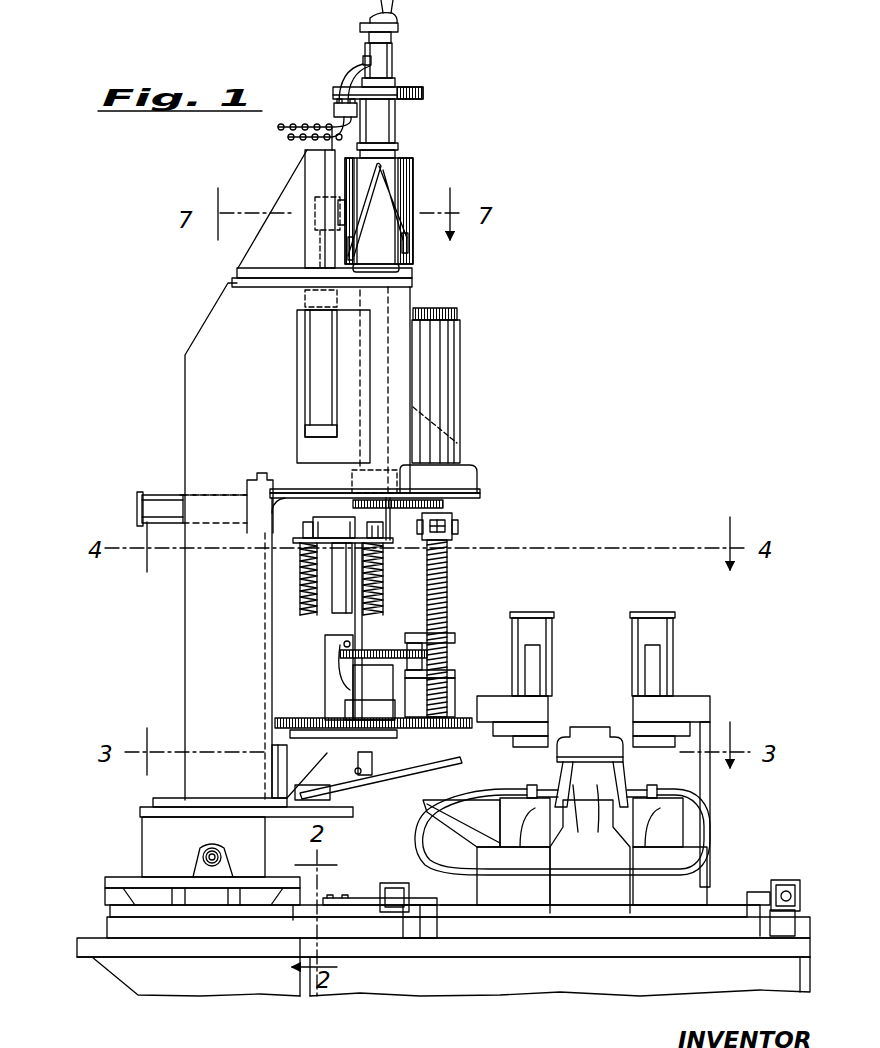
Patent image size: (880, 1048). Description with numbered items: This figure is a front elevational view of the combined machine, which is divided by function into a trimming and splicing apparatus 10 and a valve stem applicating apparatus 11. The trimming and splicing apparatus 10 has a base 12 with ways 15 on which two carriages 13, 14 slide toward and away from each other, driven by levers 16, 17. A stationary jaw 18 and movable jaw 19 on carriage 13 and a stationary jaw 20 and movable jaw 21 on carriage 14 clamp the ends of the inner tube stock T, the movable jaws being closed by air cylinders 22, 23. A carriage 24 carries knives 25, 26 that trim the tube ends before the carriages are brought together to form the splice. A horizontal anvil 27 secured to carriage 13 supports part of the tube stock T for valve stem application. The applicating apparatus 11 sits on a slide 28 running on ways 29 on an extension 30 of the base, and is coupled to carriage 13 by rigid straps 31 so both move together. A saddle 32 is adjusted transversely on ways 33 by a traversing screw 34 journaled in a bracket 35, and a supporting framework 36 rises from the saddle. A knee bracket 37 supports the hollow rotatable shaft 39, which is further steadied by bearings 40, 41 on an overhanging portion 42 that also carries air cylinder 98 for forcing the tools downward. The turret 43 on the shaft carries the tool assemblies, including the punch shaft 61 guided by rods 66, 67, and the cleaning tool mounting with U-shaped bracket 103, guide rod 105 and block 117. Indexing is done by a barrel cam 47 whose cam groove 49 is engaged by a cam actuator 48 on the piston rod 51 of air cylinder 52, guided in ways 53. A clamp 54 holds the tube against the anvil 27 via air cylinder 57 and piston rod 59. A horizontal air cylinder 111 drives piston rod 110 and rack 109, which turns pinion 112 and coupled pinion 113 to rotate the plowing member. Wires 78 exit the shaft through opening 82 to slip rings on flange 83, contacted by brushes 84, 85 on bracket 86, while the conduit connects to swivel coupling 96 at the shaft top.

The swivel coupling 96 is at (398, 29).
The wires 78 is at (363, 60).
The second opening 82 is at (372, 62).
The flange 83 is at (423, 93).
The brush 85 is at (334, 109).
The brush 84 is at (395, 104).
The bracket 86 is at (358, 112).
The ways 53 is at (325, 163).
The cam groove 49 is at (385, 185).
The barrel cam 47 is at (413, 190).
The cam actuator 48 is at (345, 219).
The piston rod 51 is at (317, 255).
The bearing 41 is at (399, 269).
The air cylinder 52 is at (316, 370).
The air cylinder 98 is at (453, 350).
The overhanging portion 42 is at (400, 393).
The bearing 40 is at (352, 482).
The air cylinder 111 is at (165, 480).
The valve stem applicating apparatus 11 is at (483, 506).
The rack 109 is at (443, 506).
The pinion 112 is at (387, 526).
The piston rod 110 is at (297, 548).
The guide rod 66 is at (300, 591).
The guide rod 67 is at (380, 596).
The elongated shaft 61 is at (337, 614).
The hollow rotatable shaft 39 is at (388, 653).
The guide rod 105 is at (447, 564).
The pinion 113 is at (340, 655).
The air cylinder 57 is at (338, 680).
The block 117 is at (452, 635).
The U-shaped bracket 103 is at (458, 669).
The turret 43 is at (468, 717).
The knee bracket 37 is at (282, 775).
The piston rod 59 is at (358, 765).
The clamp 54 is at (383, 764).
The supporting framework 36 is at (185, 665).
The saddle 32 is at (117, 877).
The bracket 35 is at (200, 877).
The traversing screw 34 is at (216, 852).
The slide 28 is at (112, 910).
The ways 29 is at (107, 933).
The extension 30 is at (122, 957).
The ways 33 is at (293, 907).
The rigid straps 31 is at (381, 902).
The lever 16 is at (410, 936).
The air cylinder 22 is at (532, 613).
The air cylinder 23 is at (652, 613).
The trimming and splicing apparatus 10 is at (683, 633).
The movable jaw 21 is at (683, 738).
The movable jaw 19 is at (552, 739).
The carriage 24 is at (580, 729).
The knife 25 is at (568, 813).
The knife 26 is at (590, 837).
The inner tube stock T is at (706, 827).
The stationary jaw 18 is at (532, 798).
The stationary jaw 20 is at (652, 798).
The anvil 27 is at (500, 845).
The carriage 13 is at (513, 877).
The carriage 14 is at (670, 877).
The lever 17 is at (780, 937).
The ways 15 is at (545, 934).
The base 12 is at (615, 942).